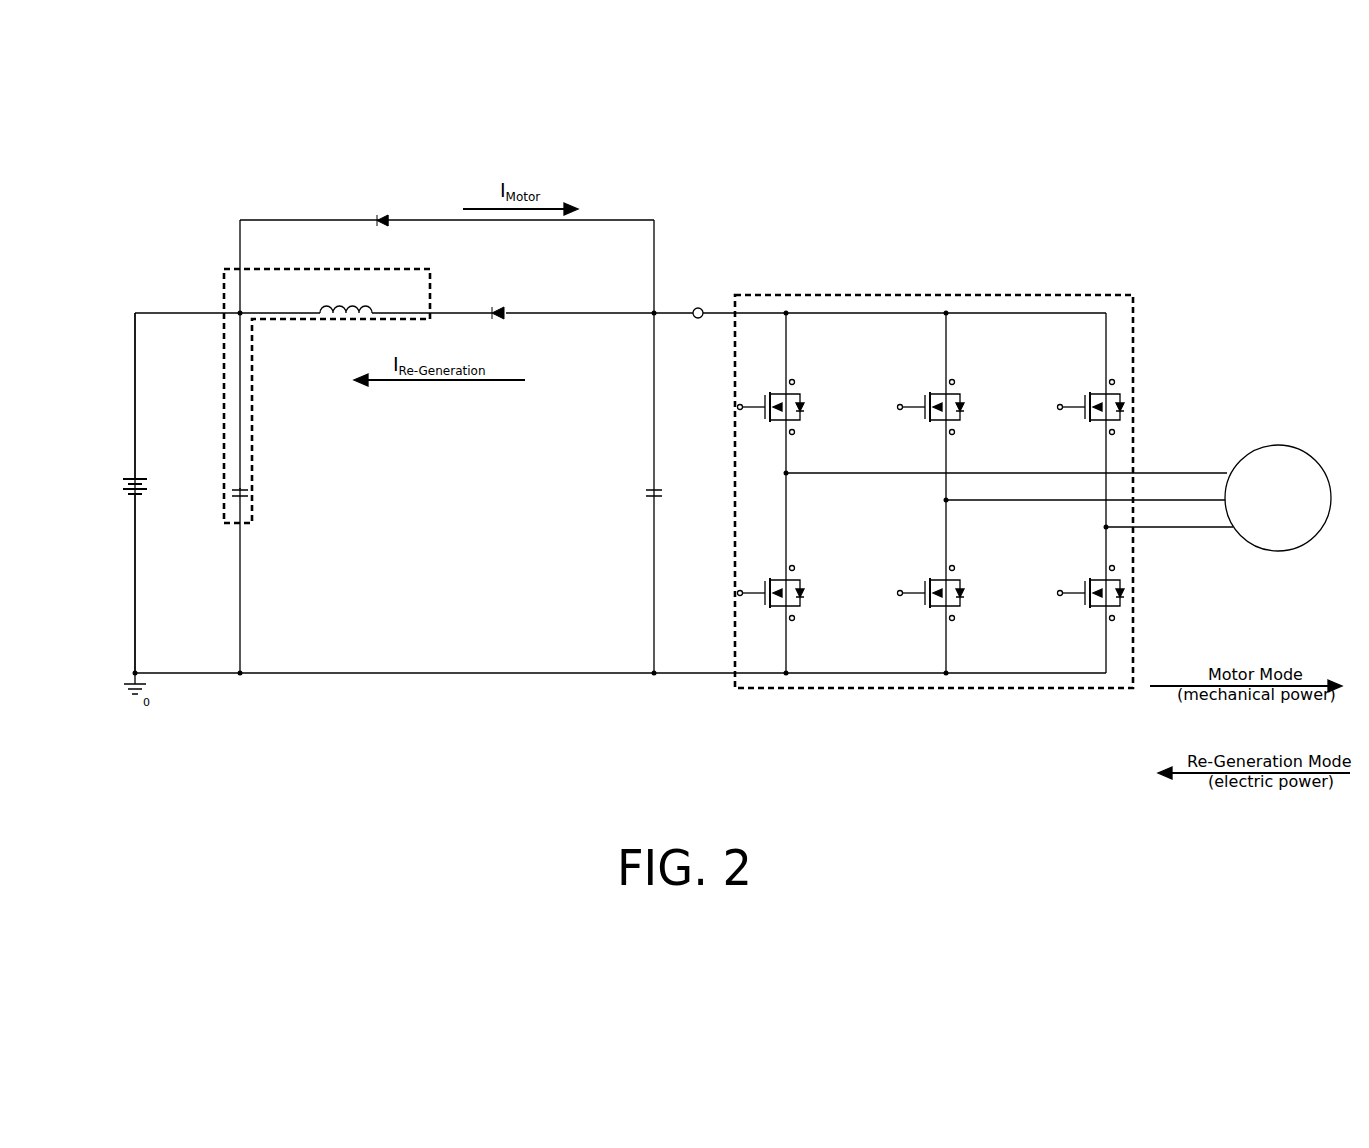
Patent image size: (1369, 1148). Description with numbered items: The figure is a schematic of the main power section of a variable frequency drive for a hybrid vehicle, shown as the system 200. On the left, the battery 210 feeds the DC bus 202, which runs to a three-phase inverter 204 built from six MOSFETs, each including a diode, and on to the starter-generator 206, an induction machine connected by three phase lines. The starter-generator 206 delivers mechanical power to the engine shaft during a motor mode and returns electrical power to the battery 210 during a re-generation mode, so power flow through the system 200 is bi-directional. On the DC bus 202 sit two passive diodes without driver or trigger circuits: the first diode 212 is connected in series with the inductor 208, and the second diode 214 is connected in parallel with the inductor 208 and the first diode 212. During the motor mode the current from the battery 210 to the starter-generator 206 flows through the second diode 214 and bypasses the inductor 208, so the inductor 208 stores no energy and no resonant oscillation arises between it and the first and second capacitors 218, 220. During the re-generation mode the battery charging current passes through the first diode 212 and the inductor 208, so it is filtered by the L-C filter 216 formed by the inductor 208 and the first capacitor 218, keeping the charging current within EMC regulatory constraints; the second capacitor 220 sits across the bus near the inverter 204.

The system 200 is at (978, 130).
The DC bus 202 is at (699, 308).
The 3-phase inverter 204 is at (923, 295).
The starter-generator 206 is at (1276, 553).
The inductor 208 is at (328, 313).
The battery 210 is at (140, 477).
The first diode 212 is at (503, 318).
The second diode 214 is at (378, 219).
The L-C filter 216 is at (224, 297).
The first capacitor 218 is at (247, 492).
The second capacitor 220 is at (661, 497).